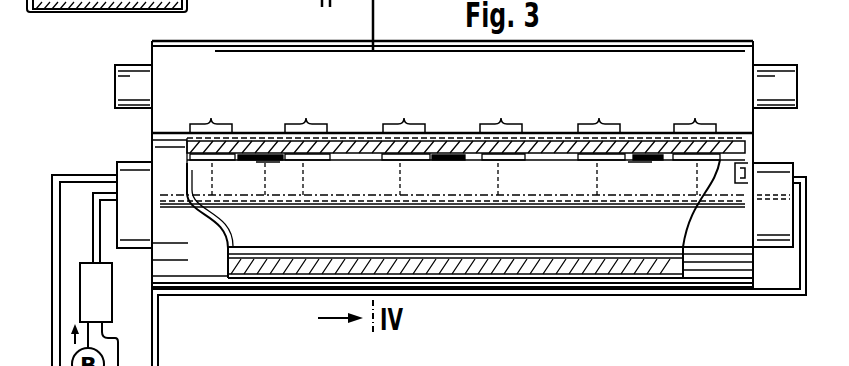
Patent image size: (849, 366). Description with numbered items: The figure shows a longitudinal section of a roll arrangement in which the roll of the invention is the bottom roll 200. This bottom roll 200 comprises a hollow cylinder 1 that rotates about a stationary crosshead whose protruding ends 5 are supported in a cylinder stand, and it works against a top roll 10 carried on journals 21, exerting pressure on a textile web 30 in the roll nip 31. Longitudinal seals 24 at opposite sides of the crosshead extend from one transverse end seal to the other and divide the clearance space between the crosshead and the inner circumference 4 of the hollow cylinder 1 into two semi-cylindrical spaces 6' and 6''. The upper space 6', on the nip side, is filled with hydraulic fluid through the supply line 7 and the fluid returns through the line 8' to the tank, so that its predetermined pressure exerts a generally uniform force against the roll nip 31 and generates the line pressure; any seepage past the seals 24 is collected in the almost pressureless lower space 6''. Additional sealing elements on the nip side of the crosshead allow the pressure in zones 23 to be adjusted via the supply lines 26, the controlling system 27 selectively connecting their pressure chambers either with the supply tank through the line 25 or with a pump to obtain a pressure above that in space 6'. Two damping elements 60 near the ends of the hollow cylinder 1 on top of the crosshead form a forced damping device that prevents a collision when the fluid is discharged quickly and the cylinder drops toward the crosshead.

The hollow cylinder 1 is at (249, 264).
The inner circumference 4 is at (370, 148).
The ends of the crosshead 5 is at (782, 212).
The semi-cylindrical space 6' is at (466, 115).
The semi-cylindrical space 6'' is at (490, 233).
The supply line 7 is at (73, 177).
The return line 8' is at (479, 271).
The top roll 10 is at (670, 60).
The journals 21 is at (772, 75).
The zones 23 is at (695, 118).
The longitudinal seals 24 is at (380, 205).
The line 25 is at (120, 352).
The supply lines 26 is at (590, 195).
The controlling system 27 is at (107, 309).
The textile web 30 is at (352, 137).
The roll nip 31 is at (760, 135).
The damping elements 60 is at (639, 165).
The bottom roll 200 is at (740, 282).